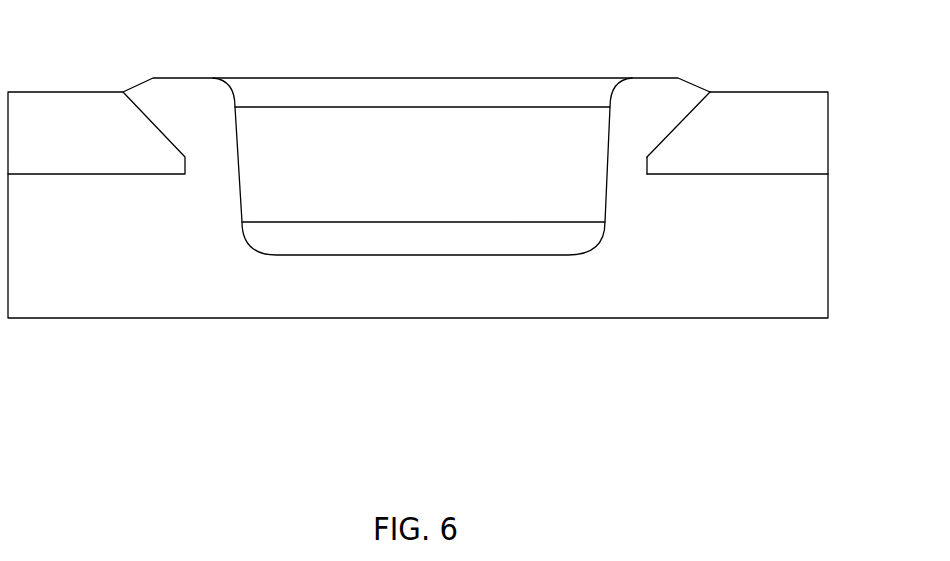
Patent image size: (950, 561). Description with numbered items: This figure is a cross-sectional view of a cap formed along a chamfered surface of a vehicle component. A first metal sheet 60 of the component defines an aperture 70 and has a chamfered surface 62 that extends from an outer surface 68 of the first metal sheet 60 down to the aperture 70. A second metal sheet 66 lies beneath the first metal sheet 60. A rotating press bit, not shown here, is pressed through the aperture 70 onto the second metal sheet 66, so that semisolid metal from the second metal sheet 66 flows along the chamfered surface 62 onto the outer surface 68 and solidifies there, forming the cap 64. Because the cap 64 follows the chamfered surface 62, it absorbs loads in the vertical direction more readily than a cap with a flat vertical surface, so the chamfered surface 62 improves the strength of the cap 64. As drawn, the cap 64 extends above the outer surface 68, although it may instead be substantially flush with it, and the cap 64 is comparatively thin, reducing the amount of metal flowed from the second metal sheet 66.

The first metal sheet 60 is at (803, 92).
The chamfered surface 62 is at (683, 117).
The cap 64 is at (637, 85).
The second metal sheet 66 is at (818, 248).
The outer surface 68 is at (88, 92).
The aperture 70 is at (658, 163).